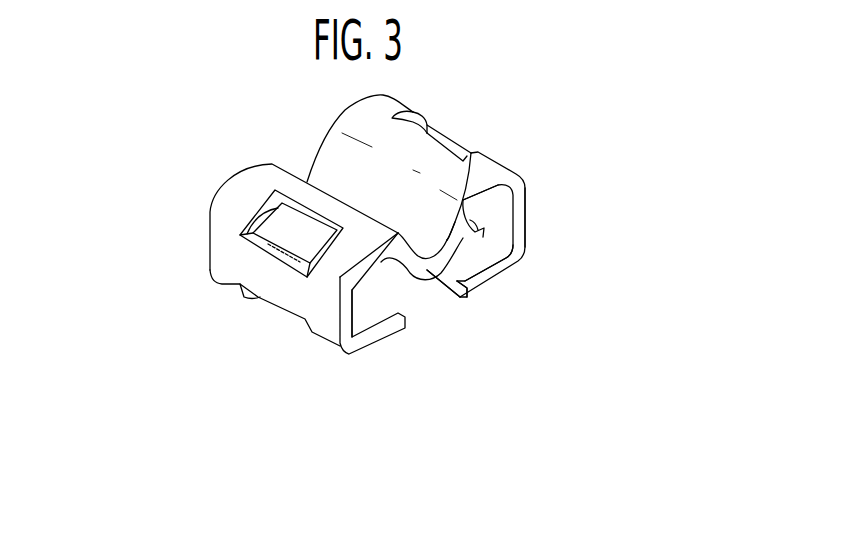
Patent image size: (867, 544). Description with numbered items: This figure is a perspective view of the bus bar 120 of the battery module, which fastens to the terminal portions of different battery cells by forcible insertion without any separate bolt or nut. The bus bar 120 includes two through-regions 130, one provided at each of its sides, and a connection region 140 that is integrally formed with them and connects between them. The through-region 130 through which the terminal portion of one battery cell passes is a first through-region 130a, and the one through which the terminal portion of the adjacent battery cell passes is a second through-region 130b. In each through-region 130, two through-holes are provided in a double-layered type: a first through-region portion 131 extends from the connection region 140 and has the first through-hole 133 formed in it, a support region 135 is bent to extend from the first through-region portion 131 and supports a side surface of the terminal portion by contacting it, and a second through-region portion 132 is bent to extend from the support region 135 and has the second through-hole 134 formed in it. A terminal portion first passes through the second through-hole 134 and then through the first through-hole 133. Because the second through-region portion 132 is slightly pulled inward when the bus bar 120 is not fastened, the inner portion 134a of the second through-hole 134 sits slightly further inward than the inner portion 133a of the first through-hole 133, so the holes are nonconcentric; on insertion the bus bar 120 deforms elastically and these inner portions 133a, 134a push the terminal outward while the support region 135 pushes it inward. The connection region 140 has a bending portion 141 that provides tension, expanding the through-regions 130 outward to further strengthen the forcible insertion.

The bus bar 120 is at (141, 115).
The through-region 130 is at (417, 282).
The first through-region 130a is at (398, 347).
The second through-region 130b is at (466, 296).
The first through-region portion 131 is at (476, 180).
The second through-region portion 132 is at (482, 257).
The first through-hole 133 is at (283, 226).
The inner portion of the first through-hole 133a is at (289, 207).
The second through-hole 134 is at (471, 152).
The inner portion of the second through-hole 134a is at (466, 222).
The support region 135 is at (528, 232).
The connection region 140 is at (421, 214).
The bending portion 141 is at (469, 289).